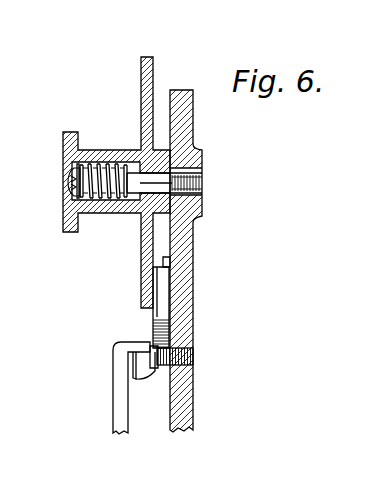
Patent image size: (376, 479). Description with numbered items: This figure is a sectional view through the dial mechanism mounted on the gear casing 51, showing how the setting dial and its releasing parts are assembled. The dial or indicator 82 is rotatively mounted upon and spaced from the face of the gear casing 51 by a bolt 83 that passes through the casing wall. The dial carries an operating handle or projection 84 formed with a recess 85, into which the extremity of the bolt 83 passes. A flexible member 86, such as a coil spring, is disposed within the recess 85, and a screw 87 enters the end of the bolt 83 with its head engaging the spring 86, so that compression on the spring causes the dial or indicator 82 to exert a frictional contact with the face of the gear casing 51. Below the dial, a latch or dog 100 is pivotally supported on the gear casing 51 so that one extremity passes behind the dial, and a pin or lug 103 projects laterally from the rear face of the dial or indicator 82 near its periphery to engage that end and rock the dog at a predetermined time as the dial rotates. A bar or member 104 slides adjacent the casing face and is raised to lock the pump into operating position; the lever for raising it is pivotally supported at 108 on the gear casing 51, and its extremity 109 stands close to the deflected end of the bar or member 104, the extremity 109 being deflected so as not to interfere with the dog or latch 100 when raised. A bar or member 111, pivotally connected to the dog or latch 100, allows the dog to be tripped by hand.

The gear casing 51 is at (185, 131).
The dial or indicator 82 is at (155, 72).
The bolt 83 is at (158, 187).
The operating handle or projection 84 is at (78, 150).
The recess 85 is at (76, 197).
The flexible member 86 is at (111, 199).
The screw 87 is at (70, 188).
The latch or dog 100 is at (160, 315).
The pin or lug 103 is at (165, 262).
The bar or member 104 is at (112, 410).
The pivotal support 108 is at (190, 353).
The extremity of lever 109 is at (150, 379).
The bar or member 111 is at (150, 322).